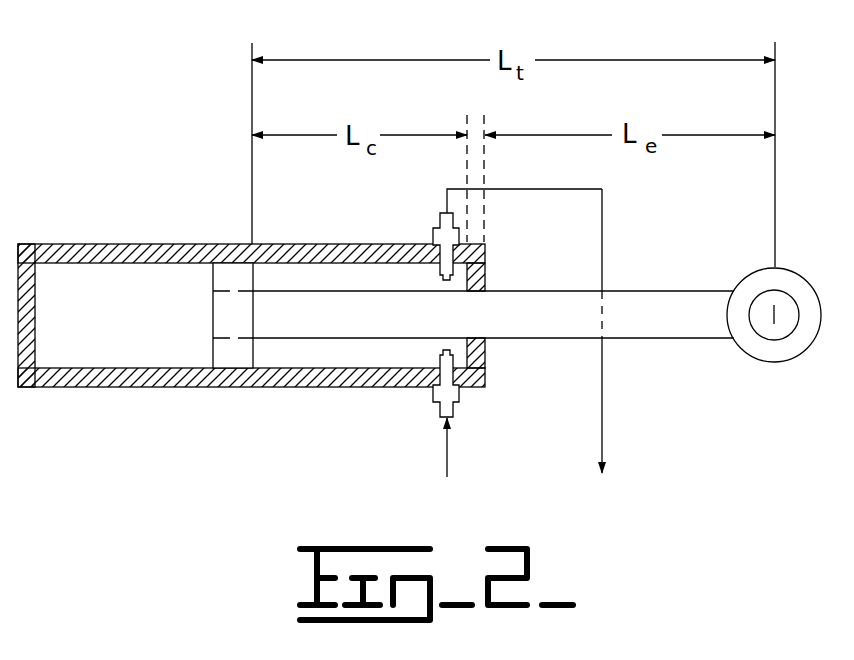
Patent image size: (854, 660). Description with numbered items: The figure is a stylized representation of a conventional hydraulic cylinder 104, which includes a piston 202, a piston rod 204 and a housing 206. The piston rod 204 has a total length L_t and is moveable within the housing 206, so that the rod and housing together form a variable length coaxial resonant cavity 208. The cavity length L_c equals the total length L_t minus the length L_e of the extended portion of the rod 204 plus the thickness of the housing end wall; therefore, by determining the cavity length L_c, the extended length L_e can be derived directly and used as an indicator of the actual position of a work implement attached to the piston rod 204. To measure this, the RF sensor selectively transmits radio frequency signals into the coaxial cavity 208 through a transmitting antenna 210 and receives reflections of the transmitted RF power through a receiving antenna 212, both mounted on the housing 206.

The hydraulic cylinder 104 is at (169, 184).
The piston 202 is at (213, 318).
The piston rod 204 is at (653, 339).
The housing 206 is at (215, 388).
The coaxial resonant cavity 208 is at (370, 287).
The transmitting antenna 210 is at (444, 417).
The receiving antenna 212 is at (459, 237).